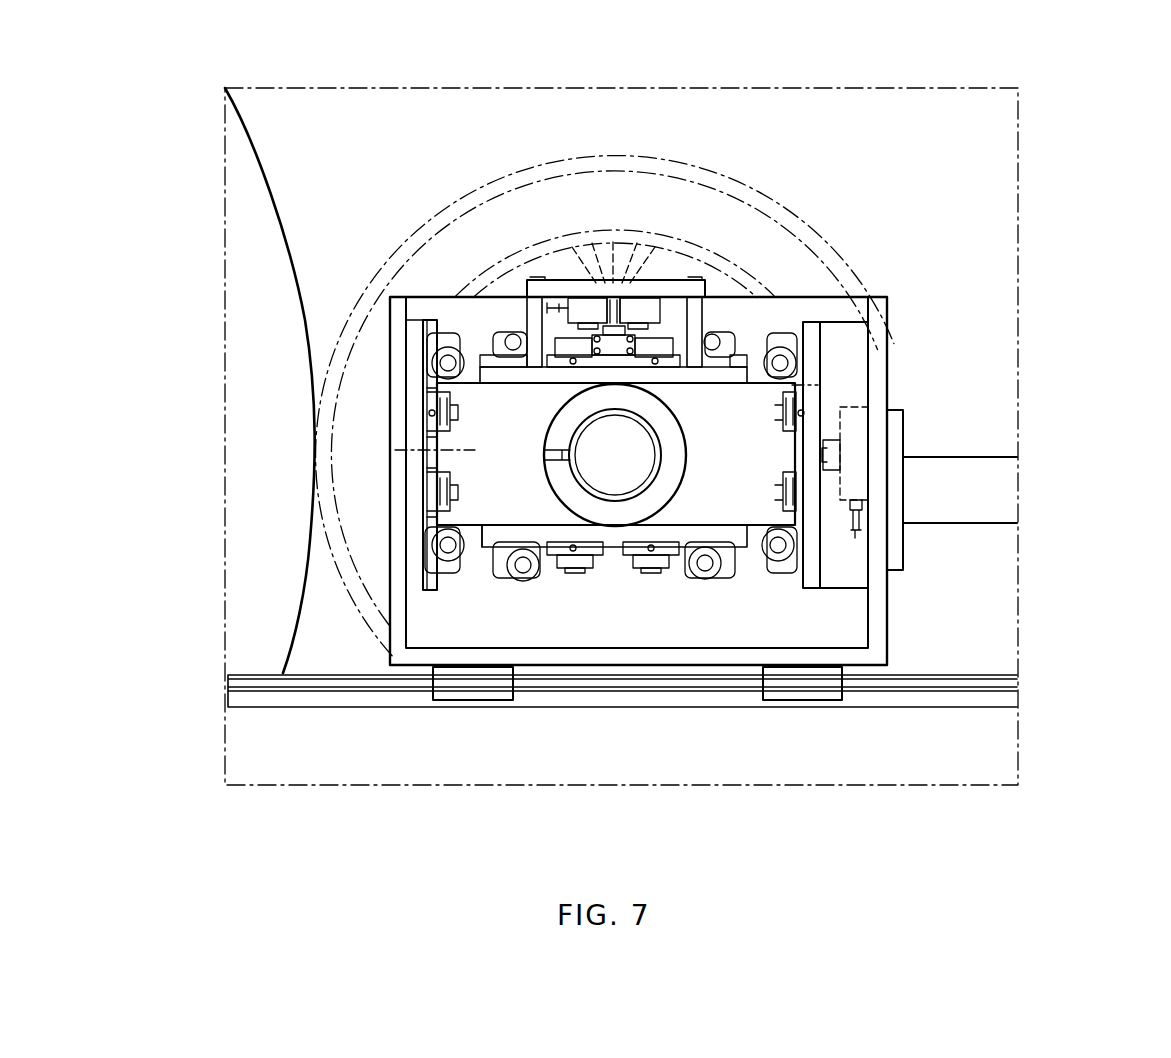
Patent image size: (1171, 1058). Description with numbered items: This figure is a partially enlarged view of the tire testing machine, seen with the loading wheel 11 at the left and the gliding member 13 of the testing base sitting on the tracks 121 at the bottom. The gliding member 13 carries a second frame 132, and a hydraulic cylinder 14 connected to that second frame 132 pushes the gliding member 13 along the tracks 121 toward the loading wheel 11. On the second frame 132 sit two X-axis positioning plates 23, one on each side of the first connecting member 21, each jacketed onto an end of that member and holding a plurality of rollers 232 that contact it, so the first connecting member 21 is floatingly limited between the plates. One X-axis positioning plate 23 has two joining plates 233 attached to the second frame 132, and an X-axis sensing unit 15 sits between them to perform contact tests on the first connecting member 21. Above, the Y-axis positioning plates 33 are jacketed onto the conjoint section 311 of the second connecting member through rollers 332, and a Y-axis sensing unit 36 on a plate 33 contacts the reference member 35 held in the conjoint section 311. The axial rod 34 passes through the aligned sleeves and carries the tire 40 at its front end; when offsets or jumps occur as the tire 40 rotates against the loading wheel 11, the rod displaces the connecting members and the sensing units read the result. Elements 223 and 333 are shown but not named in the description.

The loading wheel 11 is at (268, 223).
The gliding member 13 is at (803, 657).
The hydraulic cylinder 14 is at (982, 495).
The X-axis sensing unit 15 is at (857, 437).
The first connecting member 21 is at (480, 452).
The X-axis positioning plate 23 is at (407, 340).
The Y-axis positioning plate 33 is at (732, 380).
The axial rod 34 is at (558, 458).
The reference member 35 is at (613, 330).
The Y-axis sensing unit 36 is at (641, 310).
The tire 40 is at (790, 215).
The track 121 is at (911, 678).
The second frame 132 is at (873, 598).
The lower plate 223 is at (503, 532).
The roller 232 is at (440, 415).
The joining plate 233 is at (853, 343).
The conjoint section 311 is at (610, 570).
The roller 332 is at (503, 322).
The bracket 333 is at (548, 283).